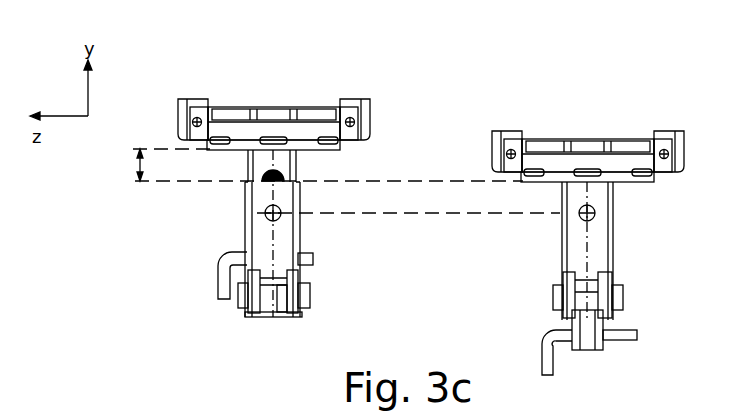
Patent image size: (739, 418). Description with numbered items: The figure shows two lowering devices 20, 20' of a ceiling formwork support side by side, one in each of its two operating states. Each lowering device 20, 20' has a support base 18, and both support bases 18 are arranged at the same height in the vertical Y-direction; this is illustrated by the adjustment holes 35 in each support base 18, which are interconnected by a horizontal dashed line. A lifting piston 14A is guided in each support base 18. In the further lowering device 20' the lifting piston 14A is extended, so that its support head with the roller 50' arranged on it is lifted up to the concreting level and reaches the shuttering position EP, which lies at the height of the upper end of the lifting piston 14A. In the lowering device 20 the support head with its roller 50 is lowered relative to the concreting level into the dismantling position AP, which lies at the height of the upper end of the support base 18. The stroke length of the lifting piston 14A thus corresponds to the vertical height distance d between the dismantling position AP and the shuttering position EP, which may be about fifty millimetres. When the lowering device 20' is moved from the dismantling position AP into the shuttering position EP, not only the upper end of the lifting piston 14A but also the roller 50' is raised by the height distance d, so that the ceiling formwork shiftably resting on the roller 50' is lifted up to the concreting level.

The roller 50' is at (274, 89).
The roller 50 is at (588, 122).
The lifting piston 14A is at (285, 163).
The adjustment hole 35 is at (282, 212).
The support base 18 is at (282, 240).
The further lowering device 20' is at (228, 276).
The lowering device 20 is at (626, 301).
The shuttering position EP is at (170, 148).
The dismantling position AP is at (185, 184).
The height distance d is at (135, 163).